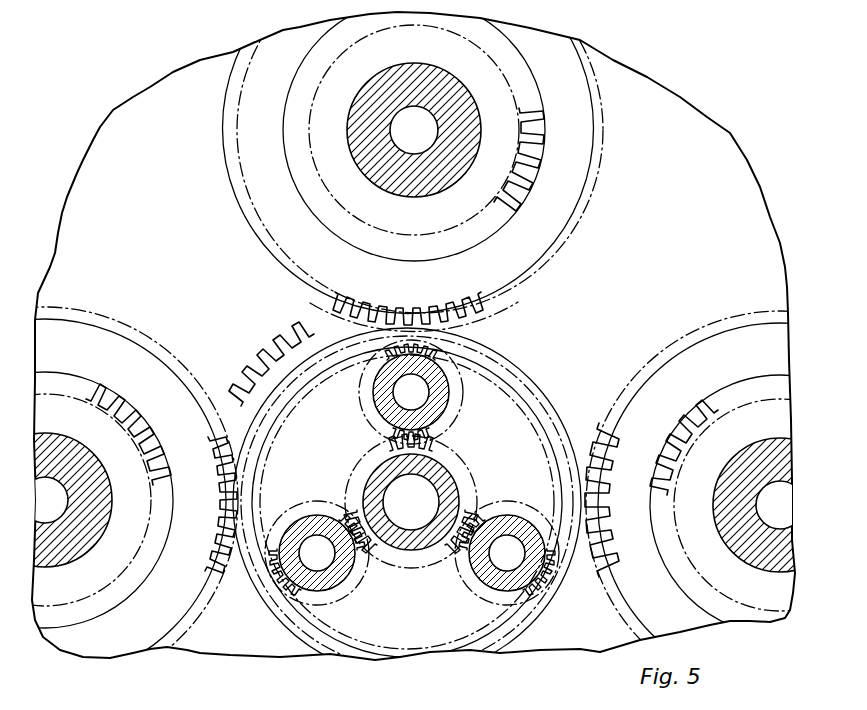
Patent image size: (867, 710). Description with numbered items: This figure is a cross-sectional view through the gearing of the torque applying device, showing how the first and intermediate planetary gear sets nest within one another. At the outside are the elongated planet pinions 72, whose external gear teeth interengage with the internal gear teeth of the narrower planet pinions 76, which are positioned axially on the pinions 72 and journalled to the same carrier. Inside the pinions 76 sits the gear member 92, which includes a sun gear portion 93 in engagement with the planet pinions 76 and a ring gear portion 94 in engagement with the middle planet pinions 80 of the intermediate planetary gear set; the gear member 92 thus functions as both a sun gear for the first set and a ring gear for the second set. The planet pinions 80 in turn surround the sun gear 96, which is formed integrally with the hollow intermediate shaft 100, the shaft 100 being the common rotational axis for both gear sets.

The elongated planet pinions 72 is at (530, 138).
The planet pinions 76 is at (563, 160).
The planet pinions 80 is at (385, 404).
The gear member 92 is at (307, 368).
The sun gear portion 93 is at (385, 310).
The ring gear portion 94 is at (384, 348).
The sun gear 96 is at (393, 443).
The intermediate shaft 100 is at (409, 548).